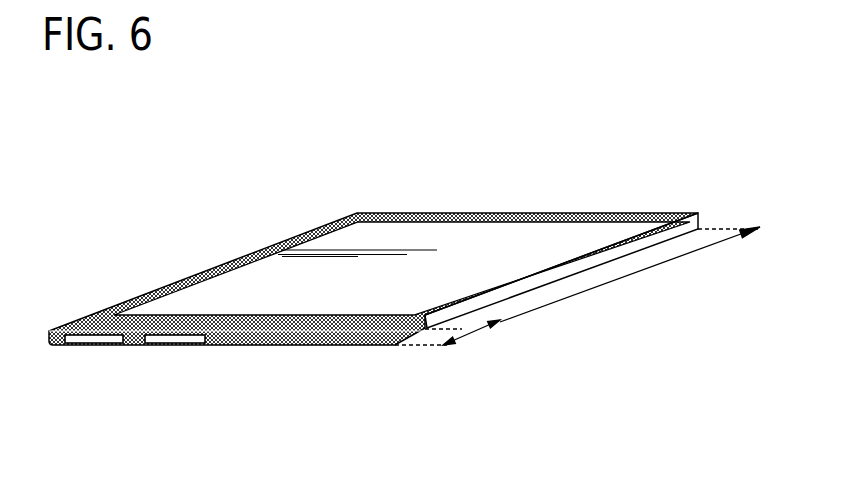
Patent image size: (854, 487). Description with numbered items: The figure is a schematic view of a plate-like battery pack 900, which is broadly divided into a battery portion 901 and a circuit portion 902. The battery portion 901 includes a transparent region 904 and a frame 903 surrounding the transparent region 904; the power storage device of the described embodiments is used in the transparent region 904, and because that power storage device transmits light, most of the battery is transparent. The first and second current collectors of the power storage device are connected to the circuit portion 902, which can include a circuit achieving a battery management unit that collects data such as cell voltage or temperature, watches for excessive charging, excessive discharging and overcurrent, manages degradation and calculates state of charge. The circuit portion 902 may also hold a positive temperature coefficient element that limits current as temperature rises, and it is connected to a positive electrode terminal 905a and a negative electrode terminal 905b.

The battery pack 900 is at (93, 141).
The battery portion 901 is at (630, 274).
The circuit portion 902 is at (496, 339).
The frame 903 is at (375, 217).
The transparent region 904 is at (560, 242).
The positive electrode terminal 905a is at (180, 338).
The negative electrode terminal 905b is at (103, 338).